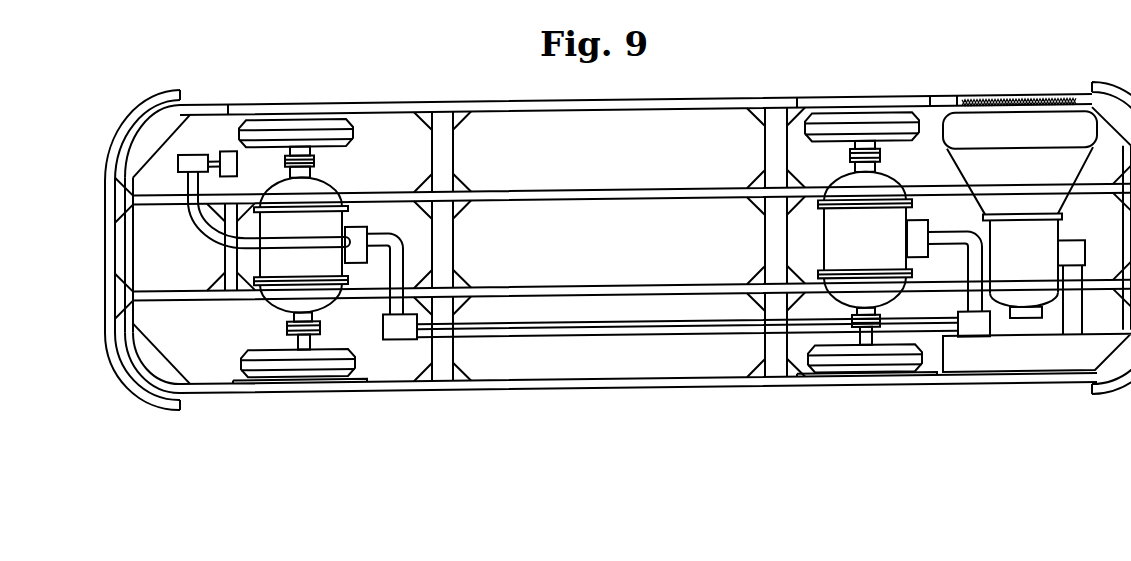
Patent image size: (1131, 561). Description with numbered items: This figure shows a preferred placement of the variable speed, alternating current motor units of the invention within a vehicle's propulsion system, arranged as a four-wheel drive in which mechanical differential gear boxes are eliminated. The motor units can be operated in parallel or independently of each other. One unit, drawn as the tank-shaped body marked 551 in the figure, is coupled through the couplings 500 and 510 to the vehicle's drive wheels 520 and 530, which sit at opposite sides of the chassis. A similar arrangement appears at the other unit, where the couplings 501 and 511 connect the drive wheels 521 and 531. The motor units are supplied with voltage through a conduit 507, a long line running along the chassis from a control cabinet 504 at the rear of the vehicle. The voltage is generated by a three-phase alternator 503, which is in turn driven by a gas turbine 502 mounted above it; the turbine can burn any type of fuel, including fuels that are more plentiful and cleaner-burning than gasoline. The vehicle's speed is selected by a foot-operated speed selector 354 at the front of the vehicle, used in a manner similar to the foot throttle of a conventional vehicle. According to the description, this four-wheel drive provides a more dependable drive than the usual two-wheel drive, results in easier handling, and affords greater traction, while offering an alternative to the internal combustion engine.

The foot-operated speed selector 354 is at (197, 155).
The coupling 500 is at (322, 160).
The coupling 501 is at (880, 157).
The gas turbine 502 is at (998, 157).
The three-phase alternator 503 is at (1025, 250).
The control cabinet 504 is at (1033, 360).
The conduit 507 is at (543, 330).
The coupling 510 is at (323, 333).
The coupling 511 is at (885, 320).
The drive wheel 520 is at (293, 125).
The drive wheel 521 is at (840, 117).
The drive wheel 530 is at (281, 368).
The drive wheel 531 is at (842, 358).
The front tank 551 is at (313, 193).